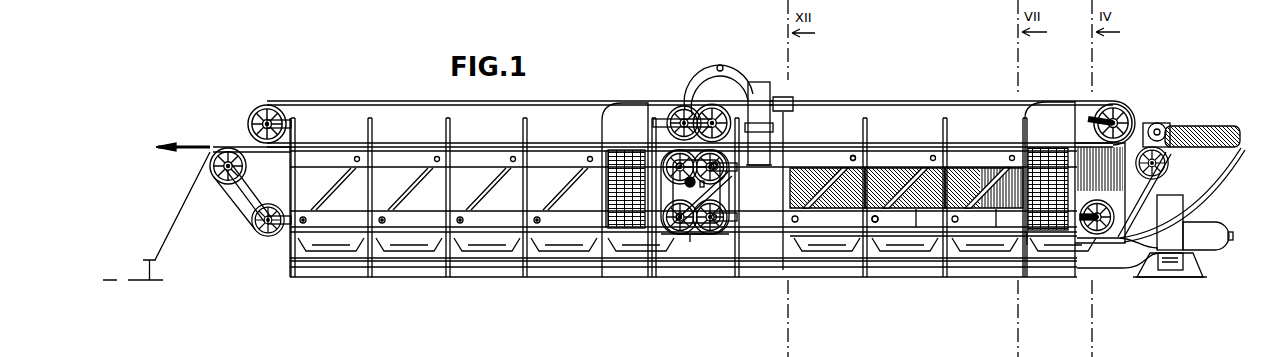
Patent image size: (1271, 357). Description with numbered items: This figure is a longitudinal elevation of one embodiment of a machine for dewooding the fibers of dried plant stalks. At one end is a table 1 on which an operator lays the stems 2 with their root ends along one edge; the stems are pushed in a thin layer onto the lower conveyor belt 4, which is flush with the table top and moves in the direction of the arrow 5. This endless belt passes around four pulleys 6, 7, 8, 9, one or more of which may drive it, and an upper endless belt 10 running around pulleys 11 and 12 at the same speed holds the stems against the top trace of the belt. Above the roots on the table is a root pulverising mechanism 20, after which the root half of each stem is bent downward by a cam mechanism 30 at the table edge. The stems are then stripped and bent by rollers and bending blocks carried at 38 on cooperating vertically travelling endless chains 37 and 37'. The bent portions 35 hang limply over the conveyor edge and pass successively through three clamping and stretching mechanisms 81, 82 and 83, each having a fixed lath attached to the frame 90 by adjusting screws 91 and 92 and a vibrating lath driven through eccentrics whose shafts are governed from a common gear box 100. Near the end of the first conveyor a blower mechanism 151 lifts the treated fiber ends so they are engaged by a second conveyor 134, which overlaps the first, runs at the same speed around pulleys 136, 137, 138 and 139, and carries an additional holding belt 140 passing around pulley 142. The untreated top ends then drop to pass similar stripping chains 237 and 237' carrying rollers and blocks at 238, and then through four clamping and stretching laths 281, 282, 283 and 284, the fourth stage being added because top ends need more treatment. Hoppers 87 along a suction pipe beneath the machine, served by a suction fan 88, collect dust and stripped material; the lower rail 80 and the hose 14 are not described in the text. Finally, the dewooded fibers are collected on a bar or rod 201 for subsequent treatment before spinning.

The table 1 is at (1243, 150).
The stalks or stems 2 is at (1232, 125).
The lower conveyor belt 4 is at (752, 238).
The arrow 5 is at (978, 133).
The pulley 6 is at (1160, 176).
The pulley 7 is at (696, 191).
The pulley 8 is at (706, 236).
The pulley 9 is at (1104, 203).
The endless belt 10 is at (965, 101).
The pulley 11 is at (1126, 104).
The pulley 12 is at (685, 108).
The hose loop 14 is at (718, 103).
The root pulverising mechanism 20 is at (1150, 123).
The cam mechanism 30 is at (1100, 118).
The portions 35 is at (916, 209).
The endless chain 37 is at (1092, 218).
The endless chain 37' is at (1006, 263).
The rollers and bending blocks mounting 38 is at (1040, 150).
The lower rail 80 is at (836, 260).
The clamping and stretching mechanism 81 is at (1002, 170).
The clamping and stretching mechanism 82 is at (928, 170).
The clamping and stretching mechanism 83 is at (848, 170).
The hoppers 87 is at (545, 250).
The suction fan 88 is at (1185, 213).
The frame 90 is at (523, 122).
The adjusting screw 91 is at (856, 159).
The adjusting screw 92 is at (878, 219).
The gear box 100 is at (672, 242).
The conveyor 134 is at (224, 200).
The pulley 136 is at (720, 172).
The pulley 137 is at (229, 147).
The pulley 138 is at (258, 236).
The pulley 139 is at (690, 236).
The endless belt 140 is at (533, 104).
The pulley 142 is at (274, 104).
The blower mechanism 151 is at (758, 80).
The bar or rod 201 is at (163, 152).
The chain 237 is at (626, 174).
The chain 237' is at (589, 172).
The rollers and bending blocks mounting 238 is at (626, 99).
The clamping and stretching lath 281 is at (560, 203).
The clamping and stretching lath 282 is at (483, 203).
The clamping and stretching lath 283 is at (405, 203).
The clamping and stretching lath 284 is at (328, 203).